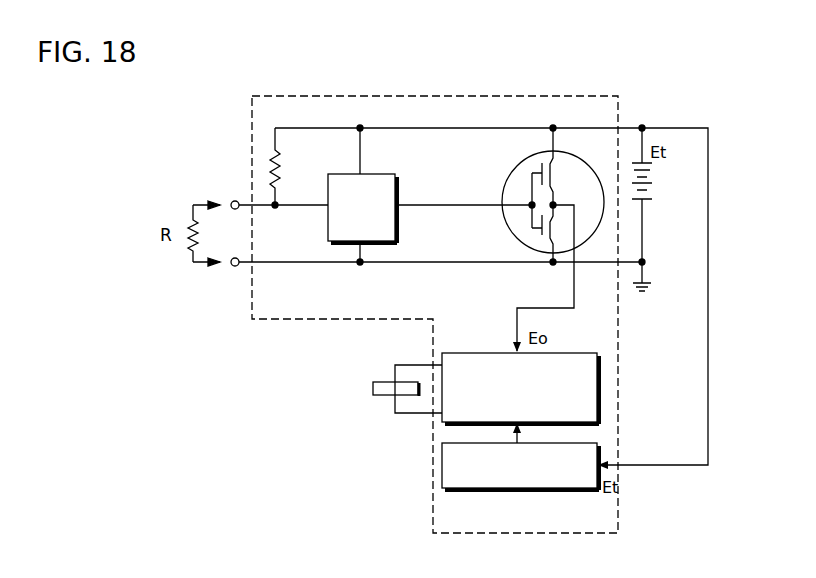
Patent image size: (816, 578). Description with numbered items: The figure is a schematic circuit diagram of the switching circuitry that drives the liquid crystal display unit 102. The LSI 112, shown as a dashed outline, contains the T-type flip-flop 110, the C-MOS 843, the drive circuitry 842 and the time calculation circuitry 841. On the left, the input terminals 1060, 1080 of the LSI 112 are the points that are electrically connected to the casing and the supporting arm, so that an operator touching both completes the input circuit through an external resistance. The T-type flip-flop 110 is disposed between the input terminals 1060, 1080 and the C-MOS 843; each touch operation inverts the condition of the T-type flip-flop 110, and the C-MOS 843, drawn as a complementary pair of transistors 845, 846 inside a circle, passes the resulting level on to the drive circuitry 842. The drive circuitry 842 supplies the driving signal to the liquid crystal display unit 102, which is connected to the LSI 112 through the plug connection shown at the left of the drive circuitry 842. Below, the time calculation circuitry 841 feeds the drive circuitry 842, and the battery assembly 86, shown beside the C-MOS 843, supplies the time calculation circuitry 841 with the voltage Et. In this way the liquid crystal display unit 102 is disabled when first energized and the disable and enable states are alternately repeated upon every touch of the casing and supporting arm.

The input terminal 1060 is at (230, 198).
The input terminal 1080 is at (230, 268).
The T-type flip-flop 110 is at (340, 193).
The LSI 112 is at (427, 93).
The C-MOS 843 is at (586, 195).
The P-channel MOS transistor 845 is at (552, 172).
The N-channel MOS transistor 846 is at (555, 230).
The battery assembly 86 is at (655, 181).
The liquid crystal display unit 102 is at (373, 388).
The drive circuitry 842 is at (572, 388).
The time calculation circuitry 841 is at (458, 465).